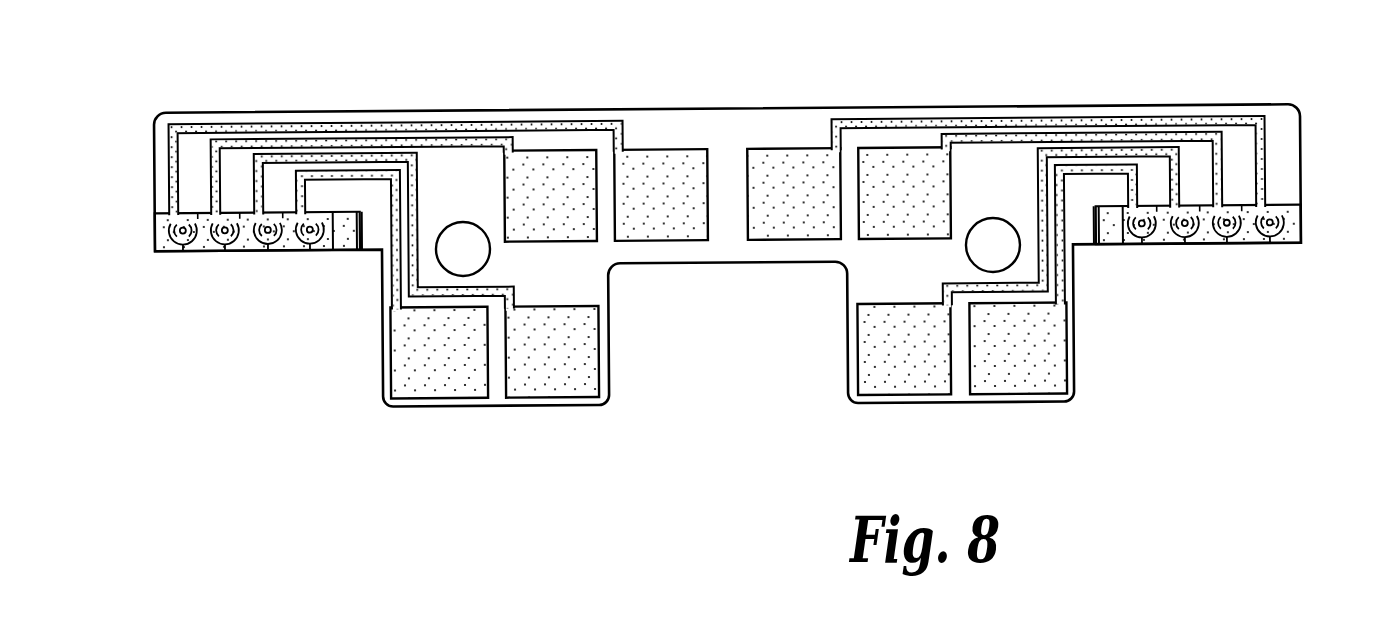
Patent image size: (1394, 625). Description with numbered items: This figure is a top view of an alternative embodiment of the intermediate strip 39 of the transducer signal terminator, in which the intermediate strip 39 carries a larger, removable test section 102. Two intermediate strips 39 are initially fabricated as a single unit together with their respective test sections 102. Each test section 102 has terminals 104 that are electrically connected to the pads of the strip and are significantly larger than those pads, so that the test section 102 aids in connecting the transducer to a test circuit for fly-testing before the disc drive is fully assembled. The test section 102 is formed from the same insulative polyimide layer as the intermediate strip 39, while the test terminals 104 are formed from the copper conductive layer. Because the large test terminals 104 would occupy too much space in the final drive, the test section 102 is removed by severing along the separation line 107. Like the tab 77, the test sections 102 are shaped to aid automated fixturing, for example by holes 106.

The test section 102 is at (532, 76).
The terminals 104 is at (978, 426).
The holes 106 is at (470, 221).
The separation line 107 is at (230, 208).
The intermediate strip 39 is at (153, 229).
The tab 77 is at (342, 240).